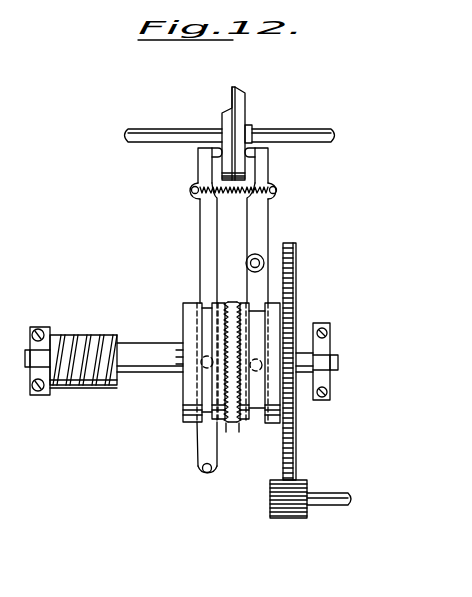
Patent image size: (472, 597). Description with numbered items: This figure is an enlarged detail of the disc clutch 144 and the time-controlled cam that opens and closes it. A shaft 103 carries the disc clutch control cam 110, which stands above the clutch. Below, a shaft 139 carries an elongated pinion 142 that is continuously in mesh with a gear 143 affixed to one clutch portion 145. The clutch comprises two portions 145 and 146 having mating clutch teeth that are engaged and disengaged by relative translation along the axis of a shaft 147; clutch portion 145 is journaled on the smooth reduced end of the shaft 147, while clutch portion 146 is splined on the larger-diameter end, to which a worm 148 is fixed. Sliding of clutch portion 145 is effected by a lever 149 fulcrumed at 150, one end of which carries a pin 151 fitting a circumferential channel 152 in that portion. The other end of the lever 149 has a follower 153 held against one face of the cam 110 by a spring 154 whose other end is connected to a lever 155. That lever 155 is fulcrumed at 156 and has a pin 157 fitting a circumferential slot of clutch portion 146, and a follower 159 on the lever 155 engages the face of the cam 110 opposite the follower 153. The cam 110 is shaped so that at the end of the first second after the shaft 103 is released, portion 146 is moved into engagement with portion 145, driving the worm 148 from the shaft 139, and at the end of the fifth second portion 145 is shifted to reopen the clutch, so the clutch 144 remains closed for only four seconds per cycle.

The shaft 103 is at (141, 128).
The disc clutch control cam 110 is at (248, 103).
The shaft 139 is at (340, 505).
The pinion 142 is at (285, 508).
The gear 143 is at (297, 284).
The disc clutch 144 is at (174, 428).
The clutch portion 145 is at (277, 320).
The clutch portion 146 is at (188, 303).
The shaft 147 is at (146, 352).
The worm 148 is at (92, 327).
The lever 149 is at (262, 222).
The fulcrum 150 is at (263, 250).
The pin 151 is at (265, 373).
The circumferential channel 152 is at (251, 421).
The follower 153 is at (266, 153).
The spring 154 is at (196, 193).
The lever 155 is at (207, 260).
The fulcrum 156 is at (204, 471).
The pin 157 is at (203, 366).
The follower 159 is at (210, 152).